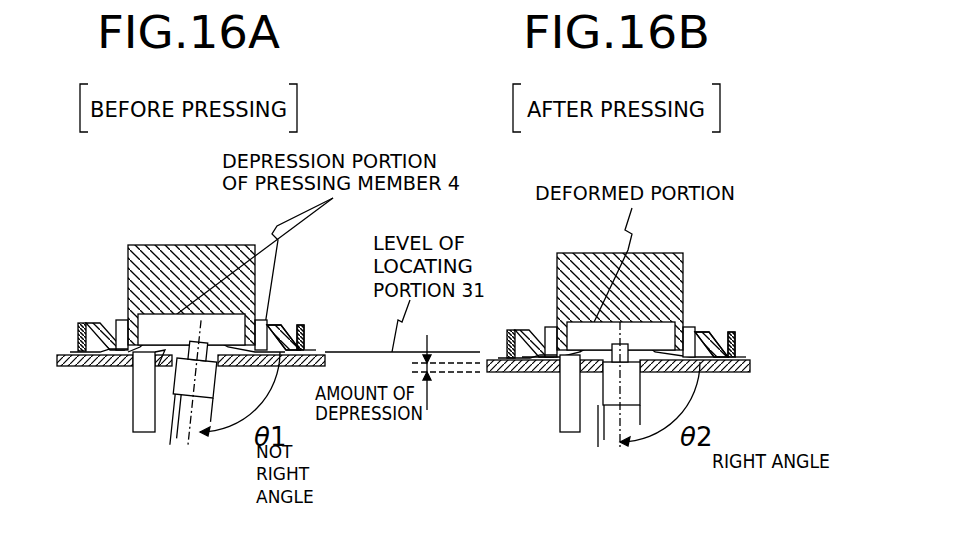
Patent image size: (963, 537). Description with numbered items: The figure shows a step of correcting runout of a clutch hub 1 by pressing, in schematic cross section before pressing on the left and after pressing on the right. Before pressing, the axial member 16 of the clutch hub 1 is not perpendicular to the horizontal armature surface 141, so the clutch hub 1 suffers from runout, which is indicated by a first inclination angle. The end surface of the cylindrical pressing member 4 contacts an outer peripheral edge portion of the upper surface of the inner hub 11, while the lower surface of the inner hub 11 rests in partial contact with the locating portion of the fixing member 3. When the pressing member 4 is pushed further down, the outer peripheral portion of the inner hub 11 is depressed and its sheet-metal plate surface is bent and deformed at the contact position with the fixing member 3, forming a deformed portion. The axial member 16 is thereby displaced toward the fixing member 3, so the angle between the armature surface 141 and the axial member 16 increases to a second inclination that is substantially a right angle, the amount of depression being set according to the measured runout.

In FIG. 16A, the clutch hub 1 is at (104, 314).
In FIG. 16B, the clutch hub 1 is at (531, 314).
In FIG. 16A, the fixing member 3 is at (133, 412).
In FIG. 16B, the fixing member 3 is at (562, 412).
In FIG. 16A, the pressing member 4 is at (148, 256).
In FIG. 16B, the pressing member 4 is at (620, 301).
In FIG. 16A, the inner hub 11 is at (298, 348).
In FIG. 16B, the inner hub 11 is at (715, 360).
In FIG. 16A, the axial member 16 is at (172, 420).
In FIG. 16B, the axial member 16 is at (598, 425).
In FIG. 16A, the armature surface 141 is at (85, 368).
In FIG. 16B, the armature surface 141 is at (500, 374).